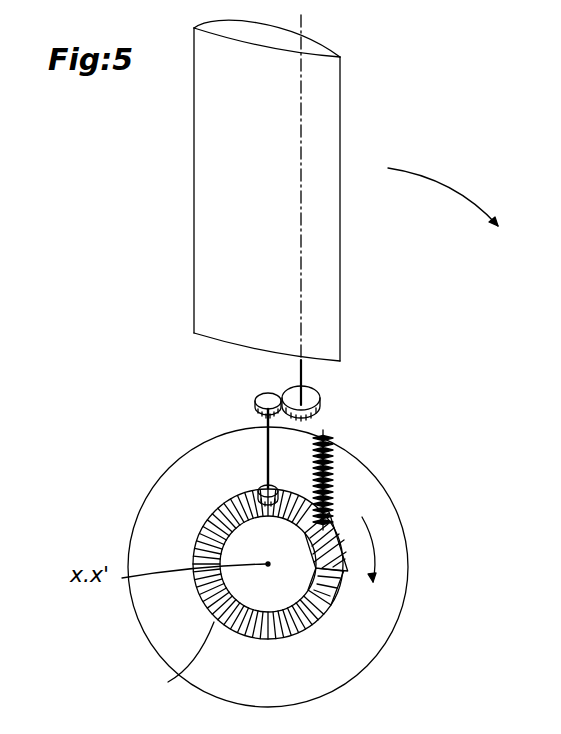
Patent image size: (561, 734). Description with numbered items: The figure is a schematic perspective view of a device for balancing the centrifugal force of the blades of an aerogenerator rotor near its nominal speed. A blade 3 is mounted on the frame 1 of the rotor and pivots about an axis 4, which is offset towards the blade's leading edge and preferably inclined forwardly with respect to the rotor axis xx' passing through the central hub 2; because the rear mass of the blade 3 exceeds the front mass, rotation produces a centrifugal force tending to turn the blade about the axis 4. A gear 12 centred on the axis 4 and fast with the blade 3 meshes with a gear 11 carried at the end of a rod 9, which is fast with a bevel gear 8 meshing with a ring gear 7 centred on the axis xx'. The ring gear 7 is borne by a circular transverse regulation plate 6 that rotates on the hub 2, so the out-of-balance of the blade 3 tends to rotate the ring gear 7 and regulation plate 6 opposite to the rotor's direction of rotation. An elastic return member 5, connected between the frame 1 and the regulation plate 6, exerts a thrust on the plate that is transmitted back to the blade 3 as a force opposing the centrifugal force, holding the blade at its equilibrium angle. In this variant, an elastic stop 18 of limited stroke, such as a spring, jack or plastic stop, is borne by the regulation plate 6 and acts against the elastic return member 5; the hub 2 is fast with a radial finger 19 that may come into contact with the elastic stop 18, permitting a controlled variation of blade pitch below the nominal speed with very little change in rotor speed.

The frame 1 is at (408, 522).
The central hub 2 is at (279, 582).
The blade 3 is at (336, 276).
The axis 4 is at (302, 144).
The elastic return member 5 is at (334, 472).
The regulation plate 6 is at (181, 661).
The ring gear 7 is at (195, 528).
The bevel gear 8 is at (260, 488).
The rod 9 is at (266, 440).
The gear 11 is at (257, 396).
The gear 12 is at (320, 400).
The elastic stop 18 is at (338, 568).
The radial finger 19 is at (332, 595).